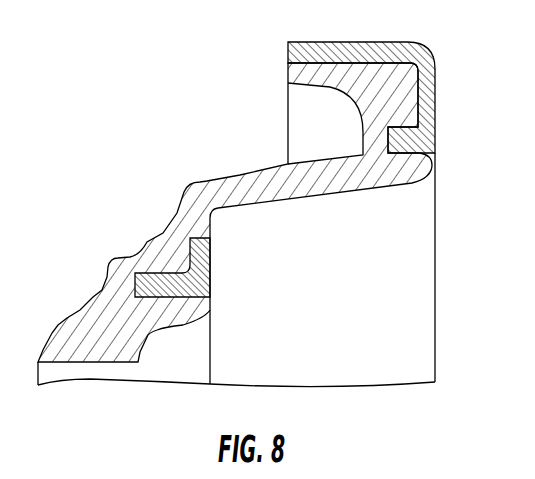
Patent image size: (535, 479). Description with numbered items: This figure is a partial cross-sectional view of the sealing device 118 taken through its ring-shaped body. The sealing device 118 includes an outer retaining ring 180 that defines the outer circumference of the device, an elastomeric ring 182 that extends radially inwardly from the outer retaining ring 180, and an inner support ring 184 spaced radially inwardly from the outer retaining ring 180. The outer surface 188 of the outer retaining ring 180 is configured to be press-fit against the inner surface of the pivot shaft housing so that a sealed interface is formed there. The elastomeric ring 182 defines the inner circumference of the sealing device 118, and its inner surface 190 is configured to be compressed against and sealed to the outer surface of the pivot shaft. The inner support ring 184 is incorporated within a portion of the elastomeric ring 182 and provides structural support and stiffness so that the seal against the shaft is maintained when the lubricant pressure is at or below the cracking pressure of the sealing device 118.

The sealing device 118 is at (191, 94).
The outer retaining ring 180 is at (432, 58).
The elastomeric ring 182 is at (184, 189).
The inner support ring 184 is at (190, 284).
The outer surface 188 is at (337, 42).
The inner surface 190 is at (100, 362).